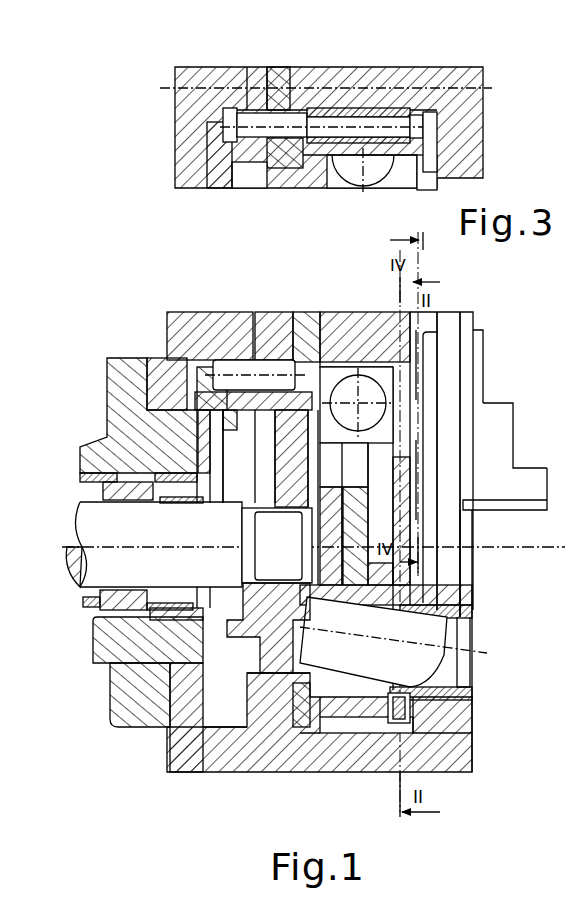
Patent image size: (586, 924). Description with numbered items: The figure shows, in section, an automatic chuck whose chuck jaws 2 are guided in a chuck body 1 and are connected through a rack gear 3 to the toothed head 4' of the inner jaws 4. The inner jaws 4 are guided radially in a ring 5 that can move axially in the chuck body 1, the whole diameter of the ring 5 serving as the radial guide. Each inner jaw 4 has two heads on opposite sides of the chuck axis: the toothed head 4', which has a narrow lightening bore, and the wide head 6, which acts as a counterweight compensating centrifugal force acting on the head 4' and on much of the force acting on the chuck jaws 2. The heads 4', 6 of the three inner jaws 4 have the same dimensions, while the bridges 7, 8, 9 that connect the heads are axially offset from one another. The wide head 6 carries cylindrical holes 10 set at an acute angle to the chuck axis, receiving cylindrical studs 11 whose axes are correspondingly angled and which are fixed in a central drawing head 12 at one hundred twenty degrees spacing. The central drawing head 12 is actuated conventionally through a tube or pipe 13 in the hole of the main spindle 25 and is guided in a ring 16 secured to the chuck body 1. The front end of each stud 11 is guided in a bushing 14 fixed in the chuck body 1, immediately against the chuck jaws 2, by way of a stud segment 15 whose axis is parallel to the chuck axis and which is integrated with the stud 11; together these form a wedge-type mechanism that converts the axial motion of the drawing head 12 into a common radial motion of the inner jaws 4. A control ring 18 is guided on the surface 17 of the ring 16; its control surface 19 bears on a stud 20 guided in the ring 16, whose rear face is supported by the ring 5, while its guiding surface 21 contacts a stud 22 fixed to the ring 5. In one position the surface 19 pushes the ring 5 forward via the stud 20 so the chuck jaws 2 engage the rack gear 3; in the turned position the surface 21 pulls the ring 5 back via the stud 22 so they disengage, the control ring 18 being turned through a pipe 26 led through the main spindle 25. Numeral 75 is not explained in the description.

In FIG. 3, the chuck body 1 is at (470, 88).
In FIG. 1, the chuck body 1 is at (378, 322).
In FIG. 1, the chuck jaws 2 is at (474, 342).
In FIG. 1, the rack gear 3 is at (424, 368).
In FIG. 1, the inner jaws 4 is at (442, 476).
In FIG. 1, the toothed head 4' is at (466, 417).
In FIG. 3, the ring 5 is at (313, 170).
In FIG. 1, the ring 5 is at (305, 340).
In FIG. 1, the wide head 6 is at (345, 700).
In FIG. 1, the bridge 7 is at (427, 525).
In FIG. 1, the bridge 8 is at (410, 578).
In FIG. 1, the bridge 9 is at (445, 612).
In FIG. 1, the cylindrical holes 10 is at (320, 713).
In FIG. 1, the cylindrical studs 11 is at (380, 695).
In FIG. 1, the central drawing head 12 is at (163, 733).
In FIG. 1, the tube or pipe 13 is at (107, 563).
In FIG. 1, the bushing 14 is at (430, 640).
In FIG. 1, the stud segment 15 is at (445, 683).
In FIG. 1, the ring 16 is at (270, 750).
In FIG. 1, the surface 17 is at (160, 360).
In FIG. 1, the control ring 18 is at (120, 410).
In FIG. 1, the control surface 19 is at (217, 383).
In FIG. 1, the stud 20 is at (247, 376).
In FIG. 3, the guiding surface 21 is at (238, 110).
In FIG. 3, the stud 22 is at (333, 118).
In FIG. 1, the main spindle 25 is at (125, 690).
In FIG. 1, the pipe 26 is at (97, 657).
In FIG. 1, the support 75 is at (197, 735).